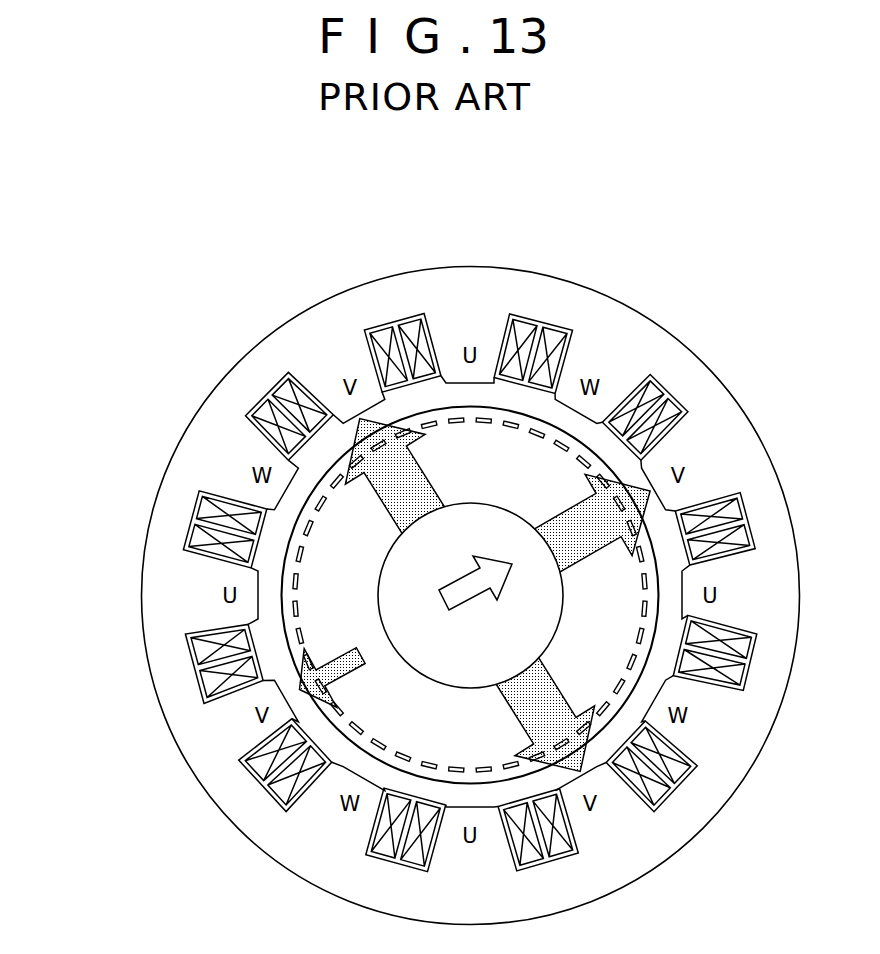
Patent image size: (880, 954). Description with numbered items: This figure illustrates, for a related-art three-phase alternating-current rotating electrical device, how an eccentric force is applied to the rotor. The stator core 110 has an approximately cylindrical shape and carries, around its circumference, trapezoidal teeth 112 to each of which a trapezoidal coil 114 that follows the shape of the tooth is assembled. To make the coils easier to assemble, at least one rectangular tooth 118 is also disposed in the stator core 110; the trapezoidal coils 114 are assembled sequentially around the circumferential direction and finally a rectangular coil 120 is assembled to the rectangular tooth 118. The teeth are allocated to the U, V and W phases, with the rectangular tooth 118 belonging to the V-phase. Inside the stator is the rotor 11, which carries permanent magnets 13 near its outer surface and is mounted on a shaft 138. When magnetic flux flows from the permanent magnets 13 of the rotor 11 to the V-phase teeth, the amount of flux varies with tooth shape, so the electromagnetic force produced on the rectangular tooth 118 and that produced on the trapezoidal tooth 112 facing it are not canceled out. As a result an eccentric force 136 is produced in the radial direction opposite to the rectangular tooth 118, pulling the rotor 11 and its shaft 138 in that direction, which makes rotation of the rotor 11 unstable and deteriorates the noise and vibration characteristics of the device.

The rotor 11 is at (507, 780).
The permanent magnet 13 is at (346, 723).
The stator core 110 is at (206, 395).
The trapezoidal tooth 112 is at (474, 332).
The trapezoidal coil 114 is at (668, 388).
The rectangular tooth 118 is at (232, 723).
The rectangular coil 120 is at (258, 760).
The eccentric force 136 is at (461, 578).
The shaft 138 is at (473, 688).